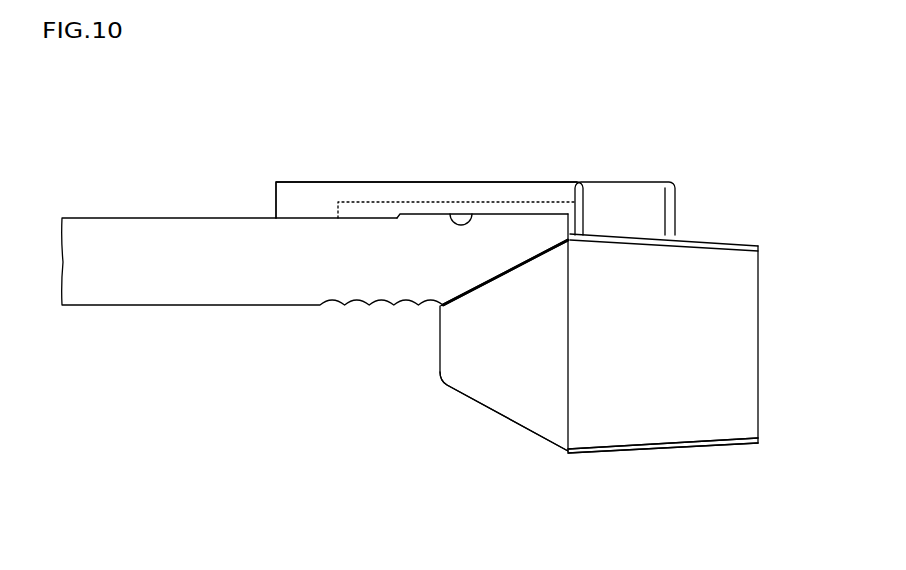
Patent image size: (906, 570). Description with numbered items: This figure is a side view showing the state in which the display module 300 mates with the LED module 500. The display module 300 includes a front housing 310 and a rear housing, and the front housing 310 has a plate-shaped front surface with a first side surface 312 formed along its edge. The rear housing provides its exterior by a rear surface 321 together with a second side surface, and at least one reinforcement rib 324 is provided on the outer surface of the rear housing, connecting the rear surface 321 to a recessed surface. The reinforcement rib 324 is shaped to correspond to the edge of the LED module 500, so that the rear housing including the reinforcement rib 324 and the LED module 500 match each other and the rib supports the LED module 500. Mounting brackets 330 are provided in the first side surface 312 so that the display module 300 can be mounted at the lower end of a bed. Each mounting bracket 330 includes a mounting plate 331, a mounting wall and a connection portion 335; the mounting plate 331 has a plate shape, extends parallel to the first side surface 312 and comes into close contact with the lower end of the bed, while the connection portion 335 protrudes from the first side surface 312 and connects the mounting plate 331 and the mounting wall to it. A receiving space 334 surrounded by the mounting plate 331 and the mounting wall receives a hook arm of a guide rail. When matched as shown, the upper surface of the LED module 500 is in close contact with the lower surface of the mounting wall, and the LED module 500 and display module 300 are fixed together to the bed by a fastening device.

The LED module 500 is at (242, 305).
The mounting bracket 330 is at (553, 182).
The mounting plate 331 is at (382, 196).
The receiving space 334 is at (478, 216).
The connection portion 335 is at (635, 193).
The front housing 310 is at (730, 240).
The first side surface 312 is at (672, 418).
The display module 300 is at (523, 427).
The rear surface 321 is at (500, 405).
The reinforcement rib 324 is at (485, 288).